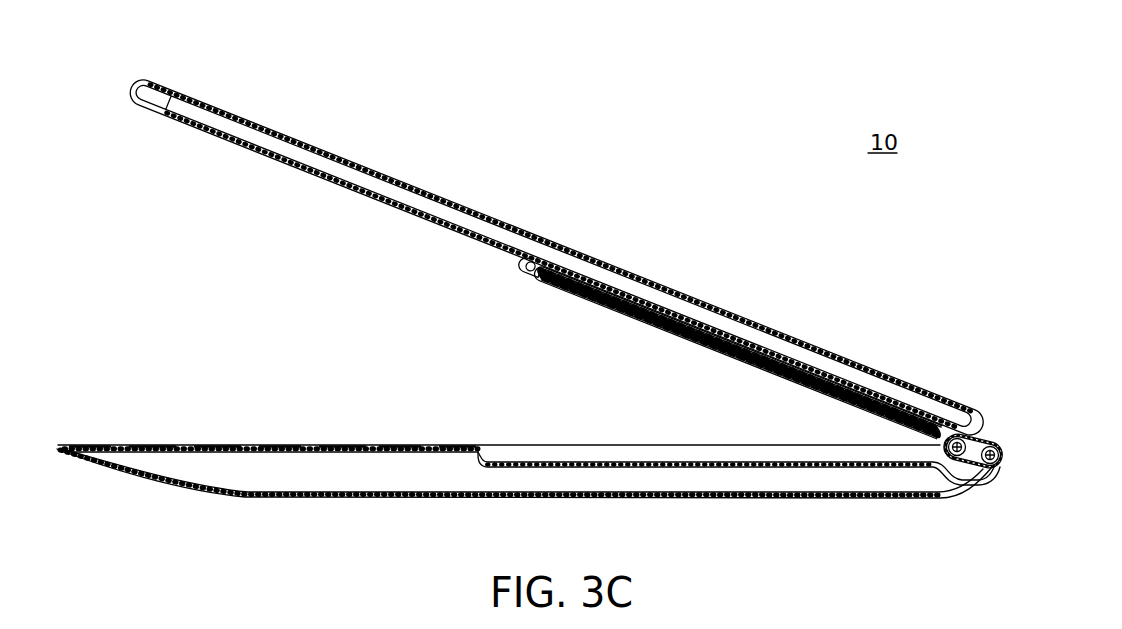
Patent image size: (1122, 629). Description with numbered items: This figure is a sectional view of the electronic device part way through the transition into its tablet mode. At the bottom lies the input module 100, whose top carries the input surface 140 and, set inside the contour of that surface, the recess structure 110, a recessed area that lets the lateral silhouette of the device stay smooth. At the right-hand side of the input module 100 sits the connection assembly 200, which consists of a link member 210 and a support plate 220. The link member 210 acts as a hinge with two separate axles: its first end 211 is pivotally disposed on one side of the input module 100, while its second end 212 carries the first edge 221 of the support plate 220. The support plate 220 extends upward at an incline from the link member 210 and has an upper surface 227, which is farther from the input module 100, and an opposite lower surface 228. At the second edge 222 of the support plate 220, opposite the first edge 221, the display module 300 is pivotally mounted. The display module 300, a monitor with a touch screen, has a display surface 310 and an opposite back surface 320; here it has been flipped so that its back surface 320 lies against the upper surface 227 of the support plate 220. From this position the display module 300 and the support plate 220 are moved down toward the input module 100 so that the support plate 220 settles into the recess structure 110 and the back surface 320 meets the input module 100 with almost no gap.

The input module 100 is at (270, 497).
The recess structure 110 is at (540, 473).
The input surface 140 is at (333, 445).
The connection assembly 200 is at (1025, 470).
The link member 210 is at (977, 450).
The first end 211 is at (1003, 450).
The second end 212 is at (958, 440).
The support plate 220 is at (690, 330).
The first edge 221 is at (938, 438).
The second edge 222 is at (532, 275).
The upper surface 227 is at (735, 337).
The lower surface 228 is at (745, 360).
The display module 300 is at (484, 190).
The display surface 310 is at (610, 265).
The back surface 320 is at (443, 225).